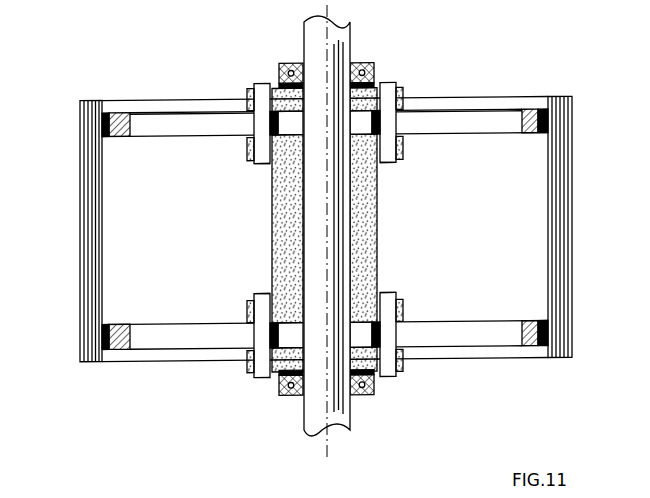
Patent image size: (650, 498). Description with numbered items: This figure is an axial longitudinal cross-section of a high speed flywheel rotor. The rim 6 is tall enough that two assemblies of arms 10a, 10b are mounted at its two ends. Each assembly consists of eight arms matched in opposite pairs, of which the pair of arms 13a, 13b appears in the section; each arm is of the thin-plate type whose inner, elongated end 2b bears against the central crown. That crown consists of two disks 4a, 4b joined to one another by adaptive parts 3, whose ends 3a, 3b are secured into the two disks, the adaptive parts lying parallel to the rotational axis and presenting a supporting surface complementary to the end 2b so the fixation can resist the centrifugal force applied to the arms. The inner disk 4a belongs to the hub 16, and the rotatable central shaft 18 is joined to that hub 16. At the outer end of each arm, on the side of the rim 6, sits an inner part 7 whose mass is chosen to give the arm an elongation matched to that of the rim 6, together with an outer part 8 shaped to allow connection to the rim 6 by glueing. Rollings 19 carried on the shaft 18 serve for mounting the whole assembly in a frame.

The inner end of arm 2b is at (286, 132).
The adaptive part 3 is at (254, 122).
The end of adaptive part 3a is at (260, 158).
The end of adaptive part 3b is at (262, 84).
The inner disk 4a is at (400, 150).
The outer disk 4b is at (403, 93).
The rim 6 is at (90, 186).
The inner part 7 is at (122, 112).
The outer part 8 is at (104, 111).
The assembly of arms 10a is at (497, 138).
The assembly of arms 10b is at (496, 318).
The arm 13a is at (160, 138).
The arm 13b is at (482, 112).
The hub 16 is at (358, 257).
The central shaft 18 is at (336, 48).
The rollings 19 is at (288, 64).